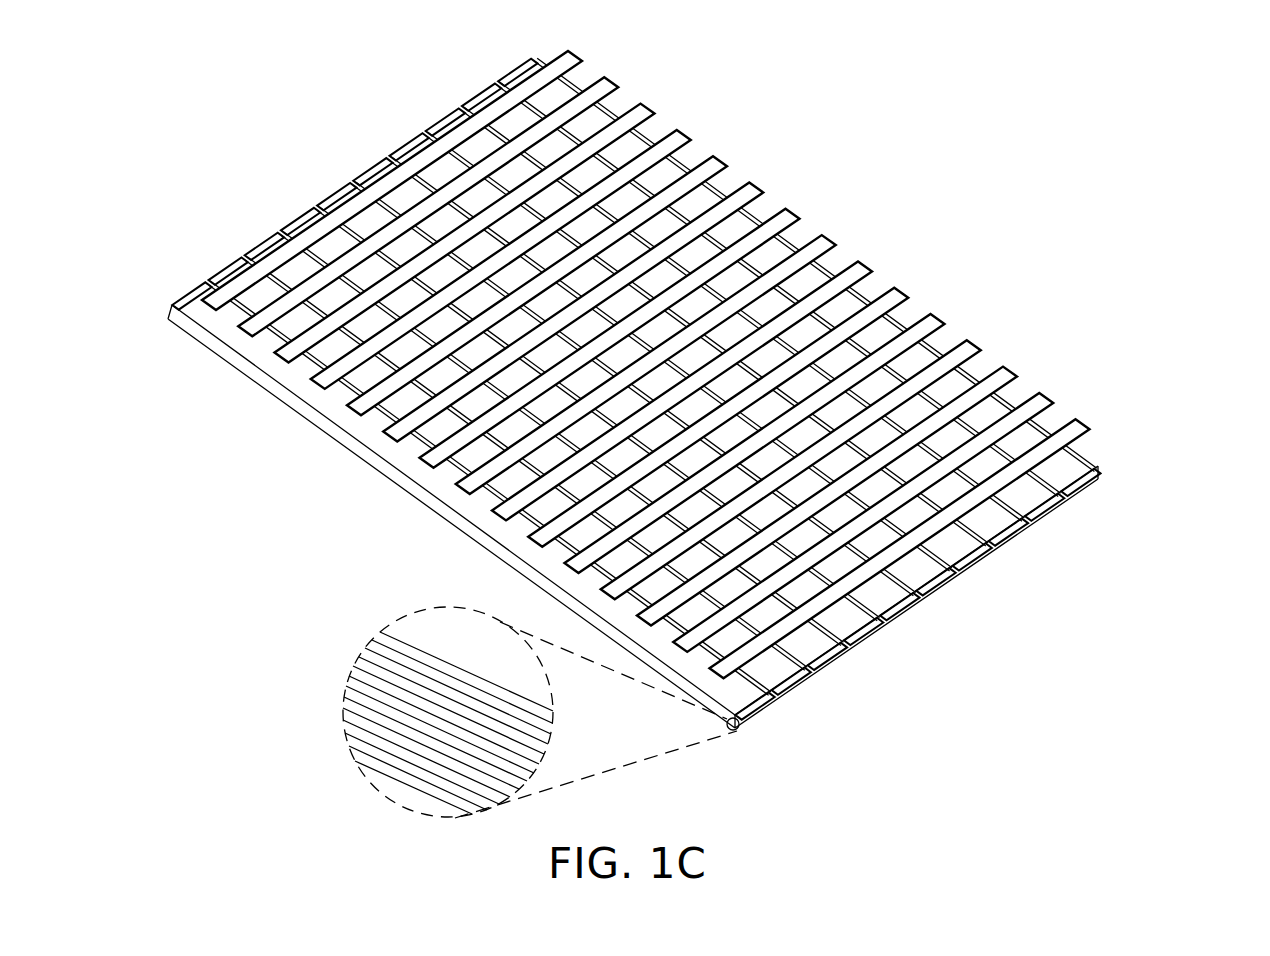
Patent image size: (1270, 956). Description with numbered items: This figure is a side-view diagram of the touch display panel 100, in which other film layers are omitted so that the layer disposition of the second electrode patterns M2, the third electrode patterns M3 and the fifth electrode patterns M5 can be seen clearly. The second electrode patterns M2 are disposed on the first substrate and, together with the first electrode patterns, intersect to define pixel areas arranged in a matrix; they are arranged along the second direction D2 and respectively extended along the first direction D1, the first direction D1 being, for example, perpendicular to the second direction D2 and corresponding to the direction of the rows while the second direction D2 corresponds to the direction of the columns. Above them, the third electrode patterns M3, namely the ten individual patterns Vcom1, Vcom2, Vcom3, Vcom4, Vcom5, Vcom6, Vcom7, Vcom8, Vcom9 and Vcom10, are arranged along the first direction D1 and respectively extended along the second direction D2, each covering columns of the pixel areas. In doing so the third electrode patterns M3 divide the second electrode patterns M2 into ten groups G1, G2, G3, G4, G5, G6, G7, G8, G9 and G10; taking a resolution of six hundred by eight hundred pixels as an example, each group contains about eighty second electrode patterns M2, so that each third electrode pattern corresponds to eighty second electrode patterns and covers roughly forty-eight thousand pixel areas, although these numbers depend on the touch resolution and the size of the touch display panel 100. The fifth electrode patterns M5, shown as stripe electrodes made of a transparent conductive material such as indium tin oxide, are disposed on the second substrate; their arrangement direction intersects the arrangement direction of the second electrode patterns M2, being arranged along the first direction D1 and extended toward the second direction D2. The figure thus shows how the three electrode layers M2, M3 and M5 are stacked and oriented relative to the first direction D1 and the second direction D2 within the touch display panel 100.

The touch display panel 100 is at (1164, 775).
The second electrode patterns M2 is at (402, 628).
The third electrode patterns M3 is at (172, 305).
The fifth electrode patterns M5 is at (945, 322).
The third electrode pattern Vcom1 is at (420, 482).
The third electrode pattern Vcom2 is at (457, 454).
The third electrode pattern Vcom3 is at (493, 427).
The third electrode pattern Vcom4 is at (531, 401).
The third electrode pattern Vcom5 is at (567, 377).
The third electrode pattern Vcom6 is at (604, 351).
The third electrode pattern Vcom7 is at (641, 326).
The third electrode pattern Vcom8 is at (679, 300).
The third electrode pattern Vcom9 is at (717, 275).
The third electrode pattern Vcom10 is at (748, 245).
The group of second electrode patterns G1 is at (774, 736).
The group of second electrode patterns G2 is at (811, 712).
The group of second electrode patterns G3 is at (847, 687).
The group of second electrode patterns G4 is at (883, 662).
The group of second electrode patterns G5 is at (919, 637).
The group of second electrode patterns G6 is at (955, 612).
The group of second electrode patterns G7 is at (992, 587).
The group of second electrode patterns G8 is at (1028, 562).
The group of second electrode patterns G9 is at (1064, 538).
The group of second electrode patterns G10 is at (1107, 513).
The first direction D1 is at (1185, 418).
The second direction D2 is at (1185, 418).